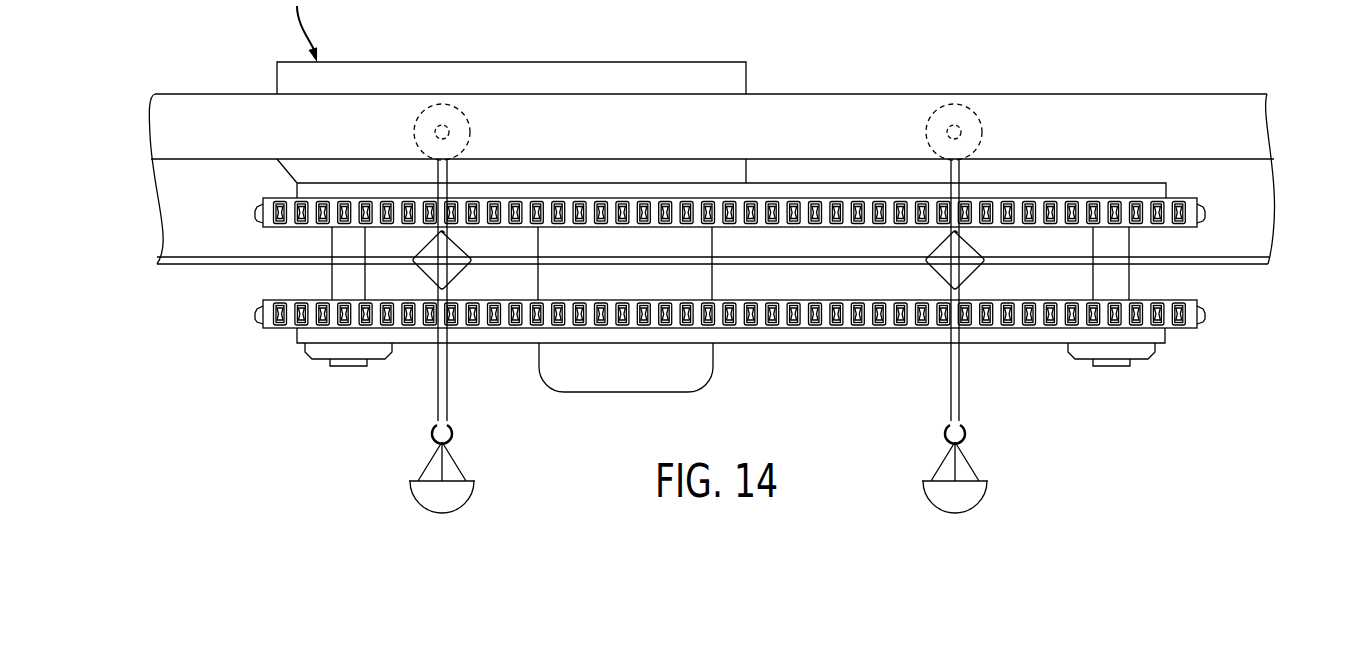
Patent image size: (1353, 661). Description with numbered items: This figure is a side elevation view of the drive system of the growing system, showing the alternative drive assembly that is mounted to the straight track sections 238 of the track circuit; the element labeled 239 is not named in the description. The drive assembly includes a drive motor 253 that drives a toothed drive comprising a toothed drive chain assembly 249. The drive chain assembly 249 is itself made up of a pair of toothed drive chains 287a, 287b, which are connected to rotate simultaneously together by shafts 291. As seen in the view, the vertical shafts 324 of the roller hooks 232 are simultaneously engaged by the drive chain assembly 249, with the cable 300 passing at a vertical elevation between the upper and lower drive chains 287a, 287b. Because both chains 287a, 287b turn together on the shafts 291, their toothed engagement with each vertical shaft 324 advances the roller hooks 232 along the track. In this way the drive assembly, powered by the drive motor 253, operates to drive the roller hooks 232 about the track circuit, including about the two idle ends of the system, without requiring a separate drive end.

The straight track section 238 is at (210, 93).
The housing shelf 239 is at (1034, 93).
The toothed drive chain assembly 249 is at (1184, 193).
The cable 300 is at (209, 266).
The toothed drive chain 287a is at (1200, 226).
The toothed drive chain 287b is at (1200, 303).
The shaft 291 is at (338, 244).
The vertical shaft 324 is at (442, 173).
The roller hook 232 is at (447, 390).
The drive motor 253 is at (697, 364).